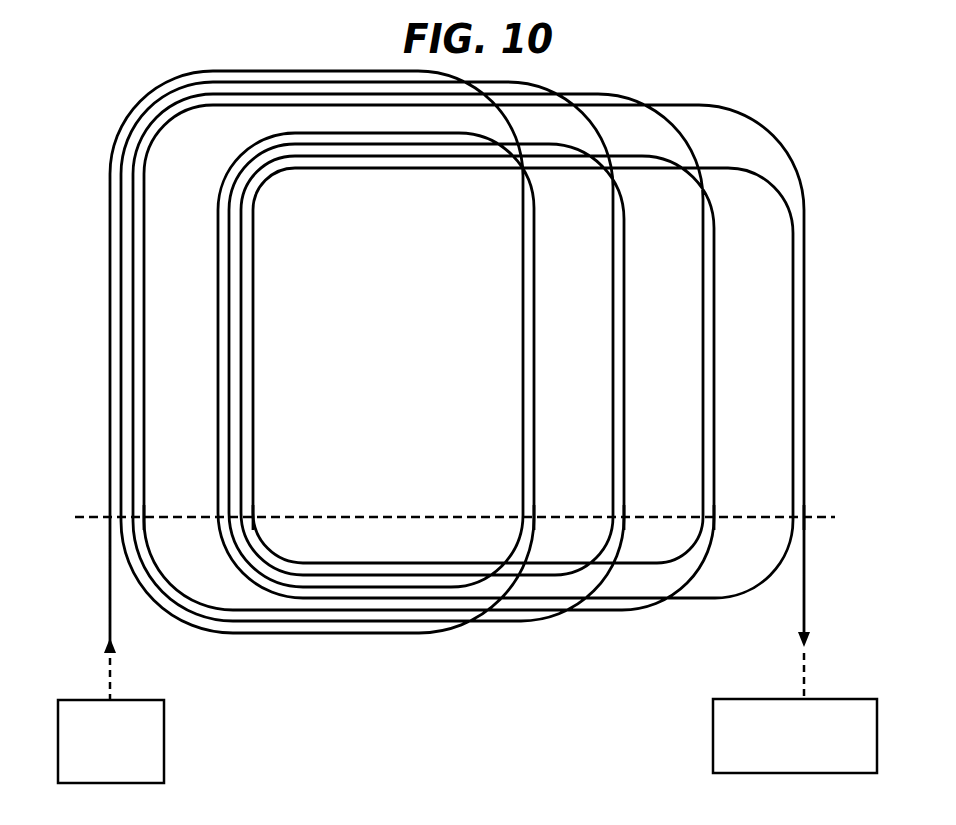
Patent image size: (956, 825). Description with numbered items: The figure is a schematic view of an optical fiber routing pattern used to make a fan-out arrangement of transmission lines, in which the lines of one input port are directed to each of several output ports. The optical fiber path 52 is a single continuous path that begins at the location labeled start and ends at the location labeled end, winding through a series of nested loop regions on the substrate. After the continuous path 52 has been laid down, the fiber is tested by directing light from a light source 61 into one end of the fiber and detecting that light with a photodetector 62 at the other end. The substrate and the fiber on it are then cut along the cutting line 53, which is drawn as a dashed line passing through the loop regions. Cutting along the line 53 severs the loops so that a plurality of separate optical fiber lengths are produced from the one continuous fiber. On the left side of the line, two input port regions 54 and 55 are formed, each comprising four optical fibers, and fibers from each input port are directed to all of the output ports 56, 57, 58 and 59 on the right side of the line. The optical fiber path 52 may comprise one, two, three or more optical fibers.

The optical fiber path 52 is at (108, 335).
The cutting line 53 is at (360, 517).
The input port region 54 is at (145, 517).
The input port region 55 is at (254, 517).
The output port 56 is at (535, 517).
The output port 57 is at (625, 517).
The output port 58 is at (715, 517).
The output port 59 is at (805, 517).
The light source 61 is at (164, 727).
The photodetector 62 is at (713, 722).